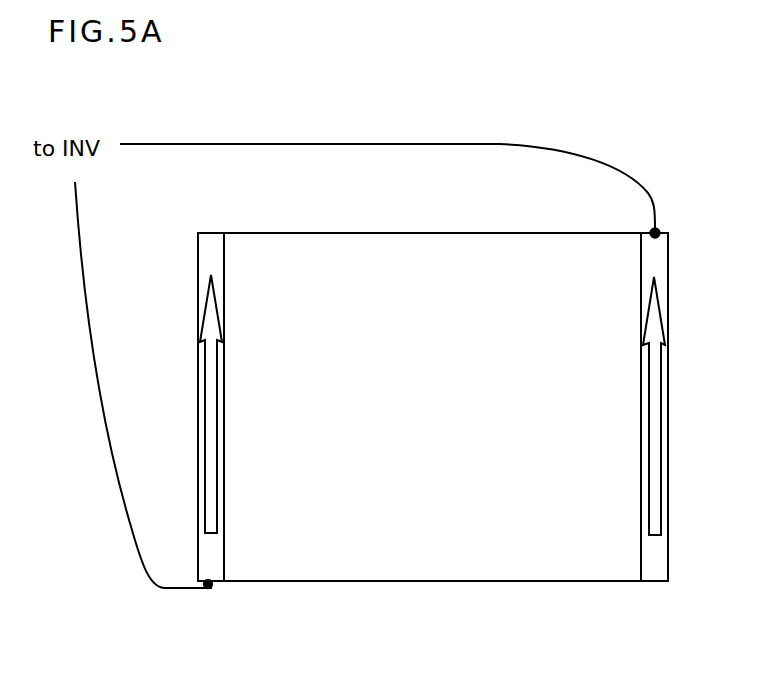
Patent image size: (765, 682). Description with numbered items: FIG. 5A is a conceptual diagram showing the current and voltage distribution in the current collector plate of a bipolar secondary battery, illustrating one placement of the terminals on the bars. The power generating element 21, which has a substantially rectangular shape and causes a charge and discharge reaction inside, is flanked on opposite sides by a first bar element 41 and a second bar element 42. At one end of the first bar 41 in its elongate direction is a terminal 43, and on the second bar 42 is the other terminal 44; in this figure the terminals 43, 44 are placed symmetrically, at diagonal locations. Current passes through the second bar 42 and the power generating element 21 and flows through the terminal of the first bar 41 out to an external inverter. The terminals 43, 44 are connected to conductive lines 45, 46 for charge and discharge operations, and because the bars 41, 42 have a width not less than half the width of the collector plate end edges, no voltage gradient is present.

The power generating element 21 is at (532, 535).
The first bar element 41 is at (657, 550).
The second bar element 42 is at (208, 267).
The terminal 43 is at (668, 231).
The terminal 44 is at (213, 595).
The conductive line 45 is at (660, 197).
The conductive line 46 is at (133, 538).